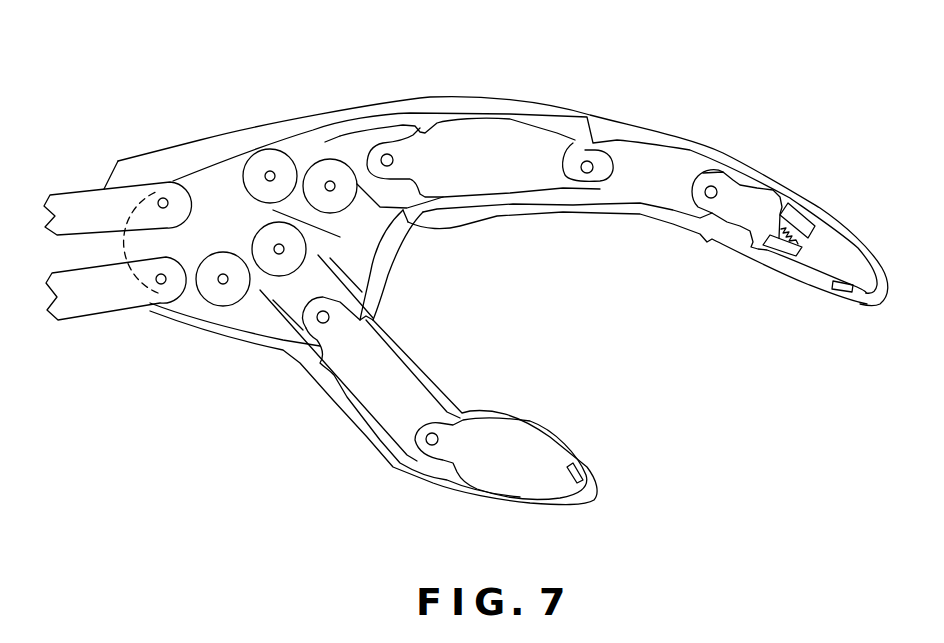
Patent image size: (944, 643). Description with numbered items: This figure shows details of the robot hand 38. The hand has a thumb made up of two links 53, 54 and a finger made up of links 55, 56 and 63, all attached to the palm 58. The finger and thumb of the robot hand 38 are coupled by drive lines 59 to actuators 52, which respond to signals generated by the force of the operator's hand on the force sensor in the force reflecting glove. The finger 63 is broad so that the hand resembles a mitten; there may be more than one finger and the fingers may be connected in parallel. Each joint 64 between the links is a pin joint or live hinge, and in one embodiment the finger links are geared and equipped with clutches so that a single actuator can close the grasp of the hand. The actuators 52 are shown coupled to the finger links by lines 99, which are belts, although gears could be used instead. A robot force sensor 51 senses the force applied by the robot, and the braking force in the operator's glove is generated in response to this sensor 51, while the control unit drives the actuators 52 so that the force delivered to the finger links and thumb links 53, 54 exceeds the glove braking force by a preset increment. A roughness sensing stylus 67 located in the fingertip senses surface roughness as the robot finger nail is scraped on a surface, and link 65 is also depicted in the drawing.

The robot hand 38 is at (174, 377).
The robot force sensor 51 is at (330, 180).
The actuators 52 is at (223, 268).
The thumb link 53 is at (543, 453).
The thumb link 54 is at (407, 377).
The finger link 55 is at (488, 142).
The finger link 56 is at (653, 155).
The palm 58 is at (370, 135).
The drive lines 59 is at (363, 210).
The finger 63 is at (858, 232).
The joint 64 is at (395, 160).
The lower link 65 is at (410, 228).
The roughness sensing stylus 67 is at (602, 493).
The lines (belts) 99 is at (307, 330).